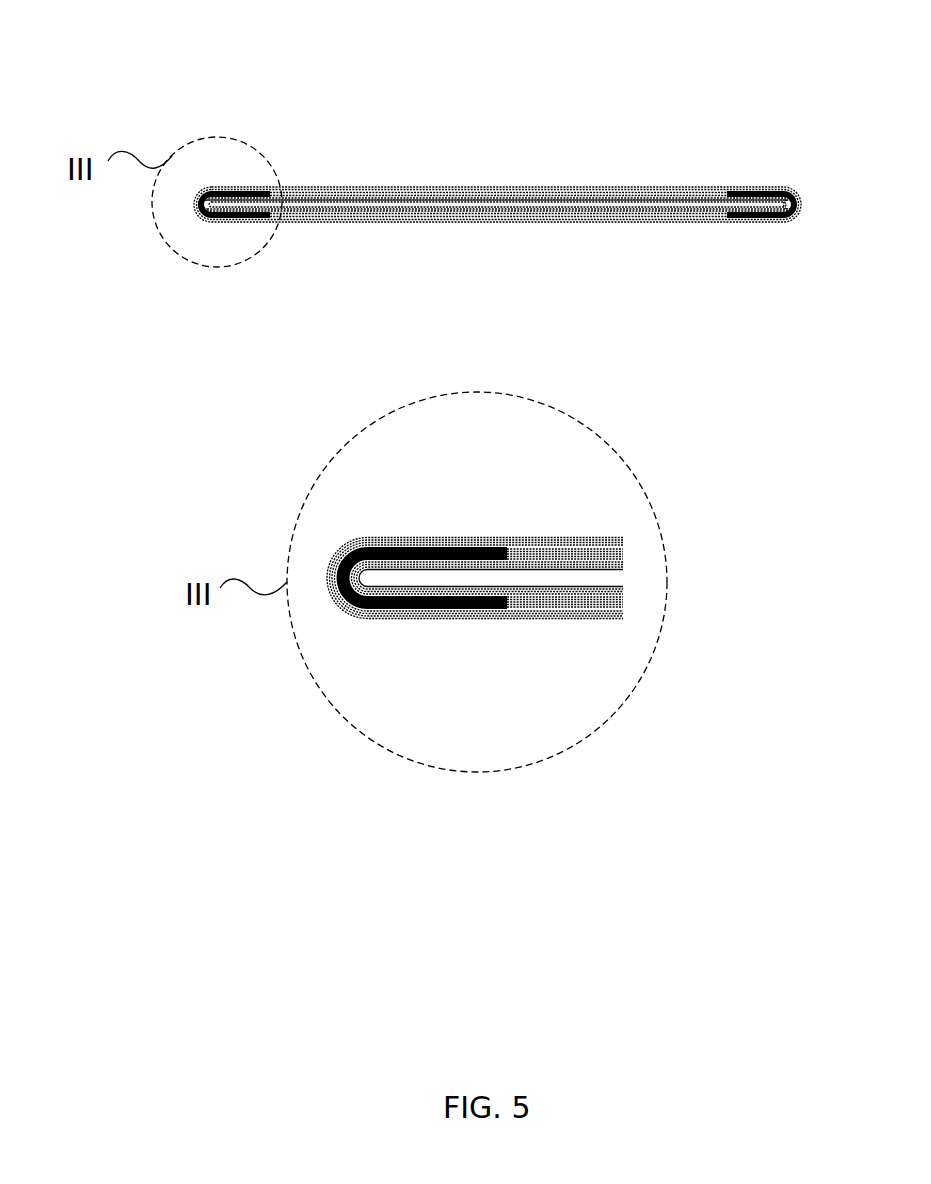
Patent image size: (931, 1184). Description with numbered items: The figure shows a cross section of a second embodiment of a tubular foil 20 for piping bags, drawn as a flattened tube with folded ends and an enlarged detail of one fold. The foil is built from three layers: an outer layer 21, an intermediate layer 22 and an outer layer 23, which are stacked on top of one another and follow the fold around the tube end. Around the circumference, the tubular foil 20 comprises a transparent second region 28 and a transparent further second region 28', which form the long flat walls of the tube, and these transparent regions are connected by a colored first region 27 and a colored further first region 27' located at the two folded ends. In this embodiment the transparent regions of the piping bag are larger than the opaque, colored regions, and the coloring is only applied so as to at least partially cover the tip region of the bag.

The tubular foil 20 is at (211, 39).
The outer layer 21 is at (352, 618).
The intermediate layer 22 is at (603, 553).
The outer layer 23 is at (603, 590).
The colored first region 27 is at (273, 248).
The colored further first region 27' is at (738, 164).
The transparent second region 28 is at (494, 247).
The transparent further second region 28' is at (499, 156).